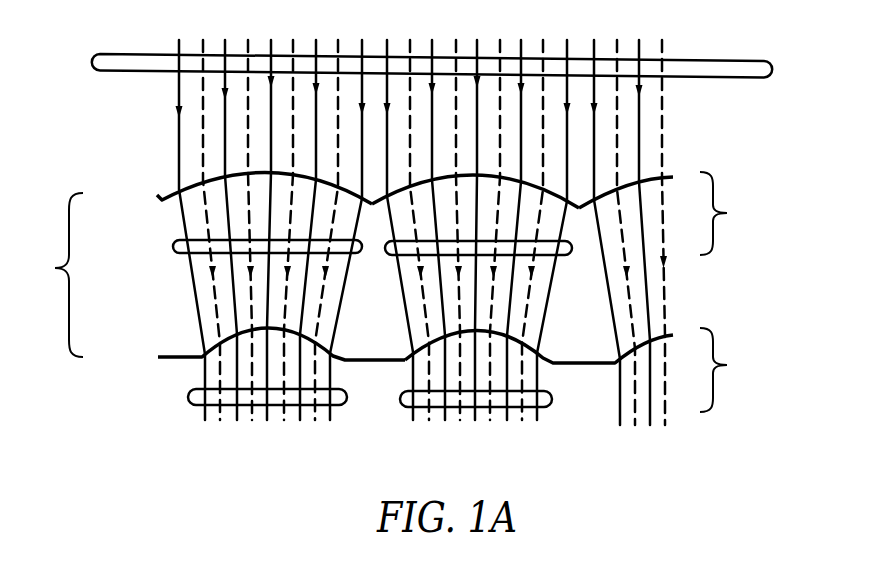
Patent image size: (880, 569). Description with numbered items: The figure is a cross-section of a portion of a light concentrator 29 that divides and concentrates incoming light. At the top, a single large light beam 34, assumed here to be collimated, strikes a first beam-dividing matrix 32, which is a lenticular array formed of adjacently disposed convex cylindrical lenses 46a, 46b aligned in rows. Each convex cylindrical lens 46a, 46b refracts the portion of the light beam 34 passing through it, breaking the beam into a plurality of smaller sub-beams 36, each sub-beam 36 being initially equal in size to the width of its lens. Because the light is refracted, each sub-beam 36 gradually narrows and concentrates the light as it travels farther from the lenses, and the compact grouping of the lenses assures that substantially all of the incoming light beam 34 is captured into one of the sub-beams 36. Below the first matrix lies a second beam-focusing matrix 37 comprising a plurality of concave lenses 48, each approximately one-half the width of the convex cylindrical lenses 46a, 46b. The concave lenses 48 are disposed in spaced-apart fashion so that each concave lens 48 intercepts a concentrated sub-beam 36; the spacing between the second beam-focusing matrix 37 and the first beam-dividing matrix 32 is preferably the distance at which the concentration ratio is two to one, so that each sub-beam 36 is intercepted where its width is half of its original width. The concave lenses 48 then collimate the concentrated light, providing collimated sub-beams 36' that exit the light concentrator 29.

The light beam 34 is at (118, 55).
The convex cylindrical lens 46a is at (234, 174).
The convex cylindrical lens 46b is at (555, 188).
The sub-beam 36 is at (347, 274).
The collimated sub-beam 36' is at (355, 412).
The concave lens 48 is at (228, 340).
The light concentrator 29 is at (53, 275).
The first beam-dividing matrix 32 is at (732, 213).
The second beam-focusing matrix 37 is at (732, 370).